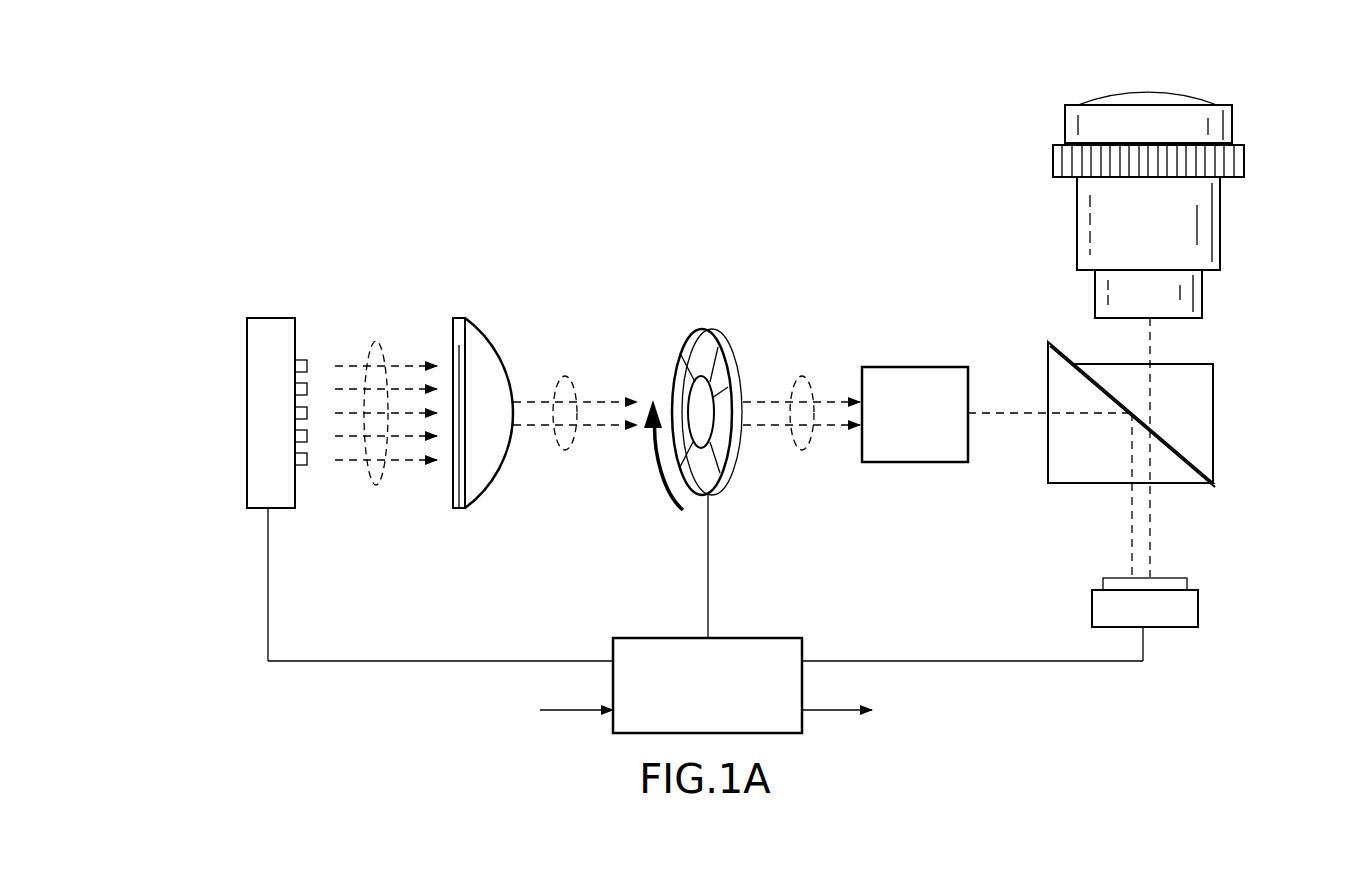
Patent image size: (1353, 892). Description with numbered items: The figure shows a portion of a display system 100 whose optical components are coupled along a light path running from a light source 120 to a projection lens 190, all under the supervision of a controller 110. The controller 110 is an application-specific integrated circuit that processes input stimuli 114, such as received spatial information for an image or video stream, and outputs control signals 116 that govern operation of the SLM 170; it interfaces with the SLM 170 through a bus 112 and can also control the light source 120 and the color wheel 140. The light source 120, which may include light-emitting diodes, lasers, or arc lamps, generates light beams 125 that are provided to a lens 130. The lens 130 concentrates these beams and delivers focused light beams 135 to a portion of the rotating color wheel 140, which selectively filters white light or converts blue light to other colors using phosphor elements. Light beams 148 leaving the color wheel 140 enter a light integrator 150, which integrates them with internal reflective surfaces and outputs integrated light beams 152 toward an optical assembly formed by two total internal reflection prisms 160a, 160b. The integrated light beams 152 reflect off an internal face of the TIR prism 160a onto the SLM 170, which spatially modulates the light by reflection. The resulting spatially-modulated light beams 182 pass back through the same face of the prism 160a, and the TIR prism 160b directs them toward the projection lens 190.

The display system 100 is at (472, 140).
The controller 110 is at (672, 638).
The bus 112 is at (972, 661).
The input stimuli 114 is at (570, 710).
The control signals 116 is at (832, 710).
The light source 120 is at (247, 413).
The light beams 125 is at (375, 340).
The lens 130 is at (462, 318).
The focused light beams 135 is at (563, 373).
The color wheel 140 is at (705, 328).
The light beams 148 is at (800, 373).
The light integrator 150 is at (915, 367).
The integrated light beams 152 is at (1002, 412).
The TIR prism 160a is at (1095, 475).
The TIR prism 160b is at (1205, 420).
The SLM 170 is at (1198, 610).
The spatially-modulated light beams 182 is at (1150, 518).
The projection lens 190 is at (1222, 223).